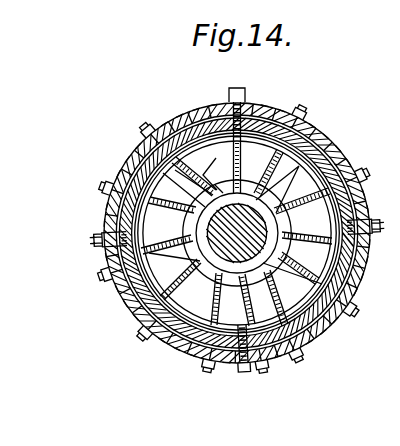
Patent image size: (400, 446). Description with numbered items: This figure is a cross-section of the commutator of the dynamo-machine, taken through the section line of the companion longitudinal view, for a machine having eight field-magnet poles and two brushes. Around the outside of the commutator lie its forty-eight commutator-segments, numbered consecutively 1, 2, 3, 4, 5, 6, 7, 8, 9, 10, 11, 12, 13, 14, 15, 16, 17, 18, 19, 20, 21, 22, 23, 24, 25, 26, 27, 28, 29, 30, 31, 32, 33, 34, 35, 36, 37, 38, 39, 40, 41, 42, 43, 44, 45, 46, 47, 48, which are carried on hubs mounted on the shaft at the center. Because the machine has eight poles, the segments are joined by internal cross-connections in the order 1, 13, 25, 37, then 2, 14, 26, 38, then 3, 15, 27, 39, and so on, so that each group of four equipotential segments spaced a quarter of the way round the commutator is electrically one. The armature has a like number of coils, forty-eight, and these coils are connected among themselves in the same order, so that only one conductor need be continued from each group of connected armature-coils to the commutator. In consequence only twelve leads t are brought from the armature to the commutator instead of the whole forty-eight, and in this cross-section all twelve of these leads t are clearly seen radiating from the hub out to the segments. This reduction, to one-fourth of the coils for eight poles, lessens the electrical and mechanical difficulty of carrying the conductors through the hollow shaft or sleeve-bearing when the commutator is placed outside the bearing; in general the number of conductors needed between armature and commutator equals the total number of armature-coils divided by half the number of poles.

The commutator-segment 1 is at (240, 135).
The commutator-segment 2 is at (250, 91).
The commutator-segment 3 is at (269, 94).
The commutator-segment 4 is at (287, 99).
The commutator-segment 5 is at (300, 112).
The commutator-segment 6 is at (320, 117).
The commutator-segment 7 is at (334, 128).
The commutator-segment 8 is at (347, 142).
The commutator-segment 9 is at (358, 157).
The commutator-segment 10 is at (363, 177).
The commutator-segment 11 is at (376, 190).
The commutator-segment 12 is at (381, 210).
The commutator-segment 13 is at (373, 226).
The commutator-segment 14 is at (382, 247).
The commutator-segment 15 is at (379, 265).
The commutator-segment 16 is at (374, 283).
The commutator-segment 17 is at (367, 300).
The commutator-segment 18 is at (350, 311).
The commutator-segment 19 is at (344, 330).
The commutator-segment 20 is at (330, 343).
The commutator-segment 21 is at (315, 354).
The commutator-segment 22 is at (294, 357).
The commutator-segment 23 is at (281, 369).
The commutator-segment 24 is at (261, 368).
The commutator-segment 25 is at (242, 357).
The commutator-segment 26 is at (221, 375).
The commutator-segment 27 is at (206, 366).
The commutator-segment 28 is at (186, 367).
The commutator-segment 29 is at (168, 359).
The commutator-segment 30 is at (152, 349).
The commutator-segment 31 is at (142, 333).
The commutator-segment 32 is at (124, 324).
The commutator-segment 33 is at (113, 309).
The commutator-segment 34 is at (104, 293).
The commutator-segment 35 is at (104, 273).
The commutator-segment 36 is at (92, 256).
The commutator-segment 37 is at (101, 239).
The commutator-segment 38 is at (90, 219).
The commutator-segment 39 is at (93, 201).
The commutator-segment 40 is at (106, 186).
The commutator-segment 41 is at (108, 166).
The commutator-segment 42 is at (118, 151).
The commutator-segment 43 is at (129, 136).
The commutator-segment 44 is at (149, 128).
The commutator-segment 45 is at (159, 112).
The commutator-segment 46 is at (175, 103).
The commutator-segment 47 is at (193, 96).
The commutator-segment 48 is at (215, 92).
The leads t is at (236, 236).